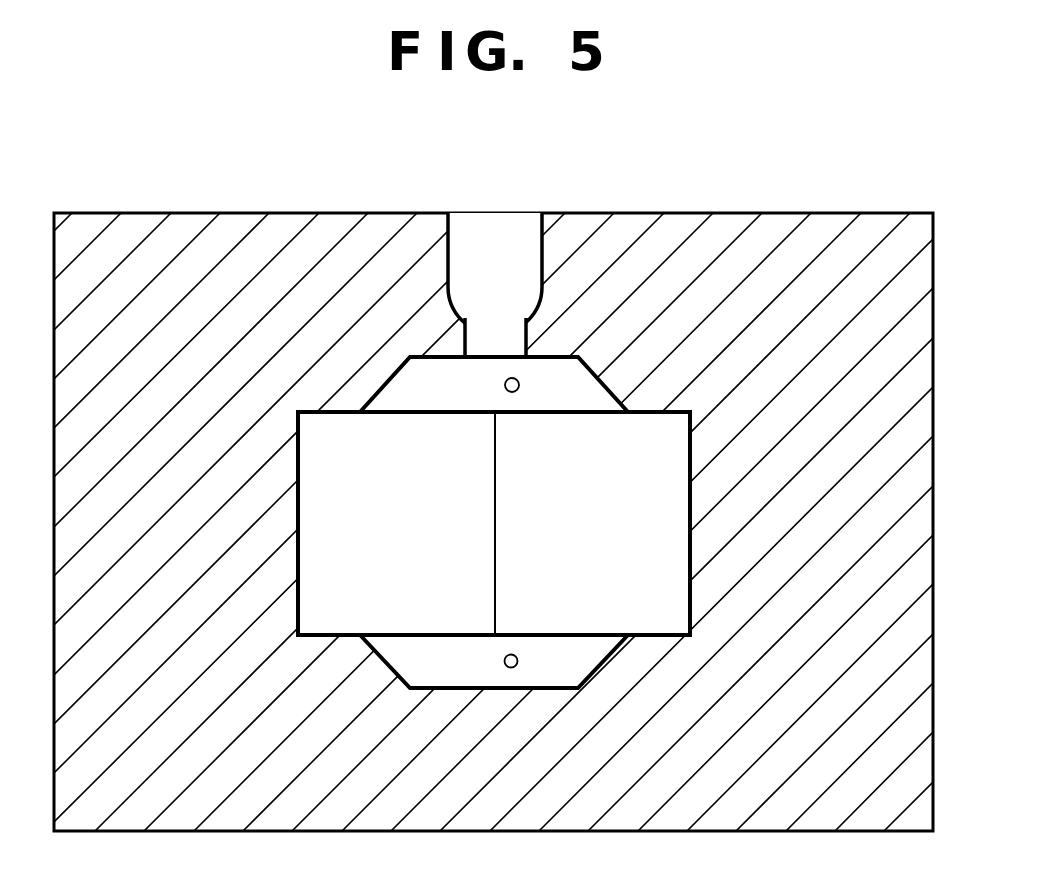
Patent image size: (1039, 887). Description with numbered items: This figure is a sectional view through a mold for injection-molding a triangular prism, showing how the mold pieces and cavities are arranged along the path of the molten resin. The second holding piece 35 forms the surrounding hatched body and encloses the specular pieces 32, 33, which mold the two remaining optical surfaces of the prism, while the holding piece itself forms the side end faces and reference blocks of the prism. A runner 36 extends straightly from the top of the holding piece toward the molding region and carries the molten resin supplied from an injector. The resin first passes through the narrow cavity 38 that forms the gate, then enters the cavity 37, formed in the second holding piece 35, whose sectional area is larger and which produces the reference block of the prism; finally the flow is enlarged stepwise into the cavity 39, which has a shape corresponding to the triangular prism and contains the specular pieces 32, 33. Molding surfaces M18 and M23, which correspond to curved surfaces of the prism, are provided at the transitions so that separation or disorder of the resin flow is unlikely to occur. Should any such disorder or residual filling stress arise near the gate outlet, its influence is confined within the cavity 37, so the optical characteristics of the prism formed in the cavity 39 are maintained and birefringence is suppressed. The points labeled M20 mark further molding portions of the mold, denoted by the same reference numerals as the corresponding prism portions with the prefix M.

The specular piece 32 is at (308, 522).
The specular piece 33 is at (675, 522).
The second holding piece 35 is at (898, 522).
The runner 36 is at (487, 227).
The cavity 37 is at (413, 362).
The cavity 38 is at (513, 333).
The cavity 39 is at (645, 616).
The molding surface M18 is at (622, 414).
The measurement point M20 is at (513, 393).
The molding surface M23 is at (472, 364).